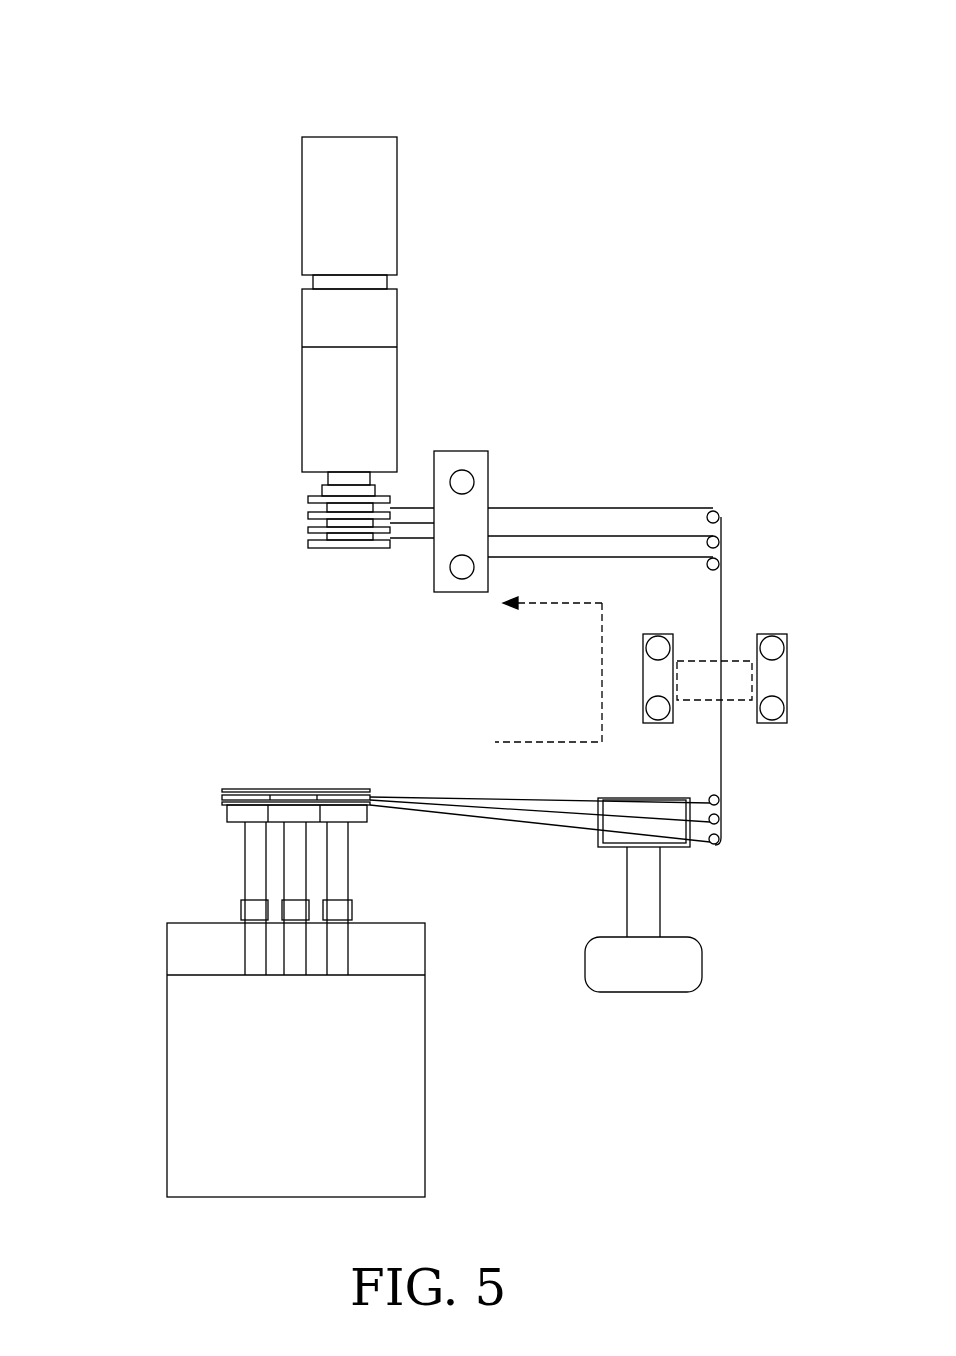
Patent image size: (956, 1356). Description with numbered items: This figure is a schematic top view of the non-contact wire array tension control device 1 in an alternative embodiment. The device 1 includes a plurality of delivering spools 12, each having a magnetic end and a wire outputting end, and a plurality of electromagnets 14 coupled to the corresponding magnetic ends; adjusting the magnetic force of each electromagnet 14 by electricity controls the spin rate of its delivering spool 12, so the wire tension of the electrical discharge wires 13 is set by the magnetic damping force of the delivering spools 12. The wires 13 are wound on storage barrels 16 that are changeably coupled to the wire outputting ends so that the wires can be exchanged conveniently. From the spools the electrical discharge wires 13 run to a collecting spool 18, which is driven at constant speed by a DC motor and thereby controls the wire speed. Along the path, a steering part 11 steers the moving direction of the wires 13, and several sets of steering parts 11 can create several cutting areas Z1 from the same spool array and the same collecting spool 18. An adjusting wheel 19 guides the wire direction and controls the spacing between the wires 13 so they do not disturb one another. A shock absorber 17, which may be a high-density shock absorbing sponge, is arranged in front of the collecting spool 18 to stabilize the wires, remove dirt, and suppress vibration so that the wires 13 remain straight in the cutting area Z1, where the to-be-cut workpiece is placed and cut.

The non-contact wire array tension control device 1 is at (426, 74).
The steering part 11 is at (717, 510).
The delivering spool 12 is at (248, 870).
The electrical discharge wire 13 is at (495, 813).
The electromagnet 14 is at (247, 1077).
The storage barrel 16 is at (242, 788).
The shock absorber 17 is at (473, 460).
The collecting spool 18 is at (315, 410).
The adjusting wheel 19 is at (669, 845).
The cutting area Z1 is at (732, 687).